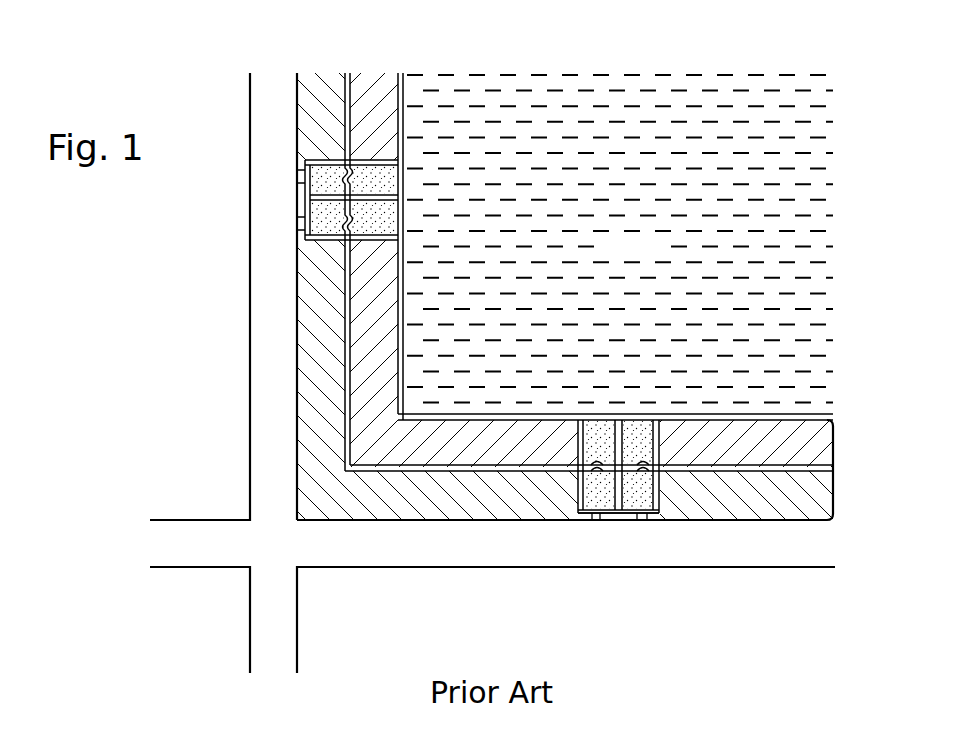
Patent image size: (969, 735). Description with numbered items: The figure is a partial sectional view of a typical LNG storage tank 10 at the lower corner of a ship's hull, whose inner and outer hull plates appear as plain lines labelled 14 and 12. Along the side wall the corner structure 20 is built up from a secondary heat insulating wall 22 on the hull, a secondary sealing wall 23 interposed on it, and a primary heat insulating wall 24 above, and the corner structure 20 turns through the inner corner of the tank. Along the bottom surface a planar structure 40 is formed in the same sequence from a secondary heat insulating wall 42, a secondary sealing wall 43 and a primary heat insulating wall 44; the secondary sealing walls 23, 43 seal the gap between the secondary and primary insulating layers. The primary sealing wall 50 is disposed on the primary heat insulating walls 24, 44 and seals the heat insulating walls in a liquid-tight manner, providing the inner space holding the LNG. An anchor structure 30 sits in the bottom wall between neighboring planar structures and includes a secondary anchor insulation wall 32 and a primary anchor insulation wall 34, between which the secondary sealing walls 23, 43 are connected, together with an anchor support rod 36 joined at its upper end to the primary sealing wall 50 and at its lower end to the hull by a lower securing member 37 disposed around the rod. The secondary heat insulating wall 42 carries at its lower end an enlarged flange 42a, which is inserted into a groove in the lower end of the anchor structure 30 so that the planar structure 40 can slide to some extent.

The LNG storage tank 10 is at (215, 190).
The outer hull 12 is at (390, 550).
The inner hull 14 is at (250, 468).
The corner structure 20 is at (452, 465).
The secondary heat insulating wall 22 is at (309, 358).
The secondary sealing wall 23 is at (348, 278).
The primary heat insulating wall 24 is at (363, 307).
The anchor structure 30 is at (657, 408).
The secondary anchor insulation wall 32 is at (652, 450).
The primary anchor insulation wall 34 is at (598, 437).
The anchor support rod 36 is at (667, 517).
The lower securing member 37 is at (609, 520).
The planar structure 40 is at (843, 422).
The secondary heat insulating wall 42 is at (757, 505).
The flange 42a is at (650, 520).
The secondary sealing wall 43 is at (800, 472).
The primary heat insulating wall 44 is at (800, 416).
The primary sealing wall 50 is at (790, 413).